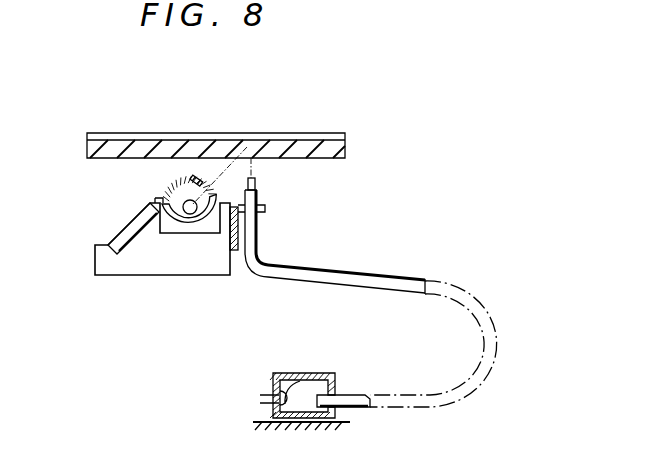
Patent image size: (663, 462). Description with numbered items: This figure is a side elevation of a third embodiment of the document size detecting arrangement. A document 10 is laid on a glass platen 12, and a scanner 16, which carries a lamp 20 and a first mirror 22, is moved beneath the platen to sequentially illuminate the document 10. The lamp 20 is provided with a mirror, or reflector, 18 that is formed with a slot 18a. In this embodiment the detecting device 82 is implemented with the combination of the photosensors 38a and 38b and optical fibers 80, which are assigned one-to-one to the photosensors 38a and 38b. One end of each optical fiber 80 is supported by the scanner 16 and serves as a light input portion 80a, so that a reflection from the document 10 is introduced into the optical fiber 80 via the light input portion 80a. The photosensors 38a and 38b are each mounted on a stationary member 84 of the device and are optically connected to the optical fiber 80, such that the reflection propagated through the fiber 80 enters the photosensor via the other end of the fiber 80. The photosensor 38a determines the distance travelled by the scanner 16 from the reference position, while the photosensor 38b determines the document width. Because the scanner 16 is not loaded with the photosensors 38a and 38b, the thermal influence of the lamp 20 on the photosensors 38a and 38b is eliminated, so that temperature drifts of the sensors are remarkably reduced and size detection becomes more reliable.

The document 10 is at (126, 133).
The glass platen 12 is at (188, 146).
The scanner 16 is at (113, 262).
The mirror 18 is at (208, 236).
The slot 18a is at (187, 194).
The lamp 20 is at (190, 214).
The first mirror 22 is at (118, 234).
The optical fibers 80 is at (313, 273).
The light input portion 80a is at (256, 183).
The detecting device 82 is at (410, 270).
The photosensor 38a is at (293, 374).
The photosensor 38b is at (293, 374).
The stationary member 84 is at (256, 421).